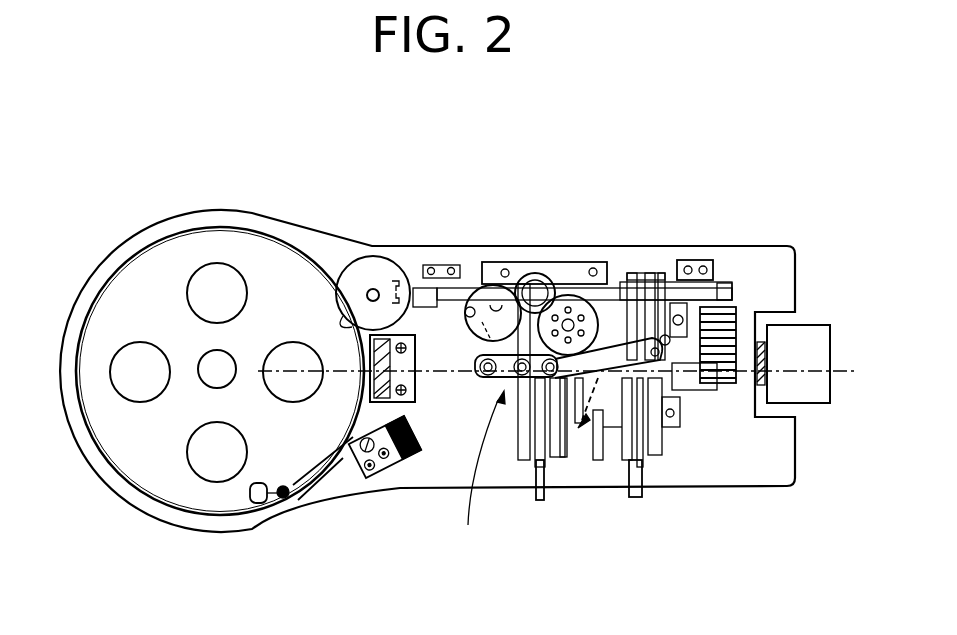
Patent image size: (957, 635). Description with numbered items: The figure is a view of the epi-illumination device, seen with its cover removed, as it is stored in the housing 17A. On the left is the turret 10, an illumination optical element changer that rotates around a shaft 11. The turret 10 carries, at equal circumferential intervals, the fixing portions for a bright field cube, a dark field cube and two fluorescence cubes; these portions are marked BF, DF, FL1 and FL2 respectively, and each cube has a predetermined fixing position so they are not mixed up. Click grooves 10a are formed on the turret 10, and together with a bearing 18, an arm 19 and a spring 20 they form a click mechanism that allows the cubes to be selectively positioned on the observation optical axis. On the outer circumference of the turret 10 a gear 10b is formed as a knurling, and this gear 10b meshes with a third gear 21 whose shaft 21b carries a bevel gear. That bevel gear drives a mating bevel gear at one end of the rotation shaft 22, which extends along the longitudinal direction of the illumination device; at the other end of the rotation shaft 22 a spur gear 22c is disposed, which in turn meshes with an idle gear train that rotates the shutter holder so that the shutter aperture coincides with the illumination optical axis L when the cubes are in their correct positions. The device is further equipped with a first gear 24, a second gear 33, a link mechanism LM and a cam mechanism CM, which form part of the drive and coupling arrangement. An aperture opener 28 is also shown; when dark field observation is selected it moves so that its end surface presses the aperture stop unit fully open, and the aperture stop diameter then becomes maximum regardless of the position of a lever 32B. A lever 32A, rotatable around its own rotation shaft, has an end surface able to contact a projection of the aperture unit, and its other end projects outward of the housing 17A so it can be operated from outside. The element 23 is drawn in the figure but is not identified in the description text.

The turret 10 is at (143, 277).
The click grooves 10a is at (250, 493).
The gear 10b is at (197, 230).
The shaft 11 is at (207, 387).
The housing 17A is at (118, 500).
The bearing 18 is at (283, 498).
The arm 19 is at (339, 470).
The spring 20 is at (410, 462).
The third gear 21 is at (388, 270).
The shaft 21b is at (372, 293).
The rotation shaft 22 is at (671, 272).
The spur gear 22c is at (720, 274).
The gear 23 is at (535, 273).
The first gear 24 is at (505, 272).
The aperture opener 28 is at (588, 415).
The lever 32A is at (533, 500).
The lever 32B is at (642, 495).
The second gear 33 is at (568, 318).
The cam mechanism CM is at (607, 262).
The illumination optical axis L is at (838, 352).
The link mechanism LM is at (475, 477).
The fluorescence cube portion FL1 is at (140, 372).
The fluorescence cube portion FL2 is at (217, 293).
The bright field cube portion BF is at (293, 372).
The dark field cube portion DF is at (217, 452).